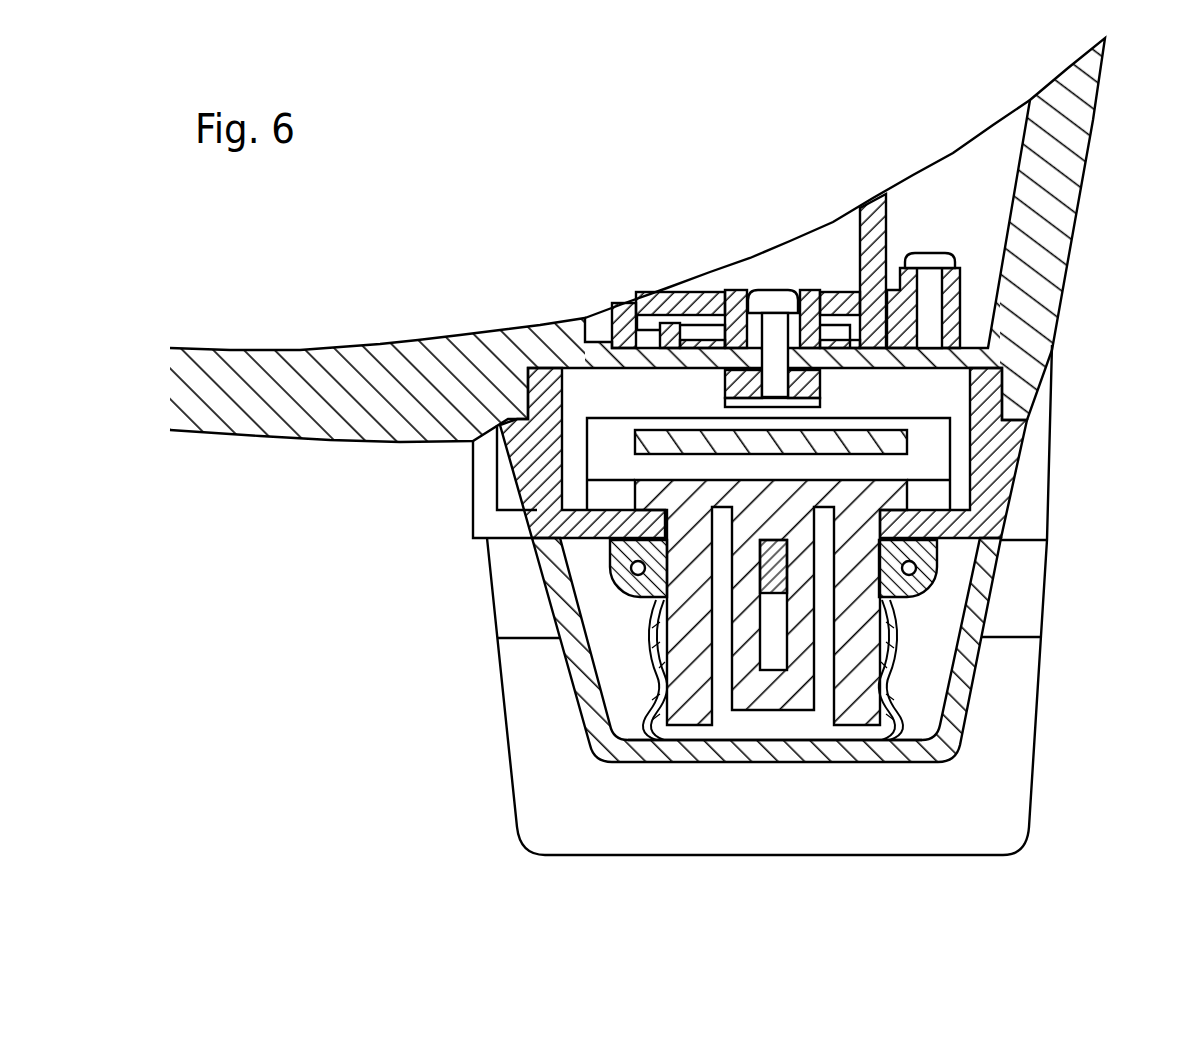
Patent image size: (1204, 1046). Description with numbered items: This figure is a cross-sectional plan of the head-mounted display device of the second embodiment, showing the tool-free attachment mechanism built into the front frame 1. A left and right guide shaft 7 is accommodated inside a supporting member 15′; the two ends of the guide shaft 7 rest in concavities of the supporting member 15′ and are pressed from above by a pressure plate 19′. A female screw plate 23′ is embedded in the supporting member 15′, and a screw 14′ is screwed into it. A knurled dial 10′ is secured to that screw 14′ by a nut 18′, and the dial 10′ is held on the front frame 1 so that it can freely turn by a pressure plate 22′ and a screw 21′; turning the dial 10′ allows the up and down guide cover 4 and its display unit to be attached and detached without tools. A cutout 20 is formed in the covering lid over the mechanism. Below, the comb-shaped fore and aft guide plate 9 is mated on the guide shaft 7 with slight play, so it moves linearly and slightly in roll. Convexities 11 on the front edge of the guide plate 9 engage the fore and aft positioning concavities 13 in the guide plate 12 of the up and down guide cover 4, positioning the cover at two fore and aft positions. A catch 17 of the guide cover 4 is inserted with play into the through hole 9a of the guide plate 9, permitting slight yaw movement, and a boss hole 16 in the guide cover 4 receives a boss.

The front frame 1 is at (1050, 255).
The up and down guide cover 4 is at (973, 690).
The left and right guide shaft 7 is at (937, 467).
The fore and aft guide plate 9 is at (793, 688).
The through hole 9a is at (770, 680).
The dial 10′ is at (667, 330).
The convexities 11 is at (680, 710).
The guide plate 12 is at (653, 673).
The fore and aft positioning concavities 13 is at (640, 653).
The screw 14′ is at (777, 302).
The supporting member 15′ is at (528, 450).
The boss hole 16 is at (610, 573).
The catch 17 is at (773, 577).
The nut 18′ is at (748, 332).
The pressure plate 19′ is at (953, 383).
The cutout 20 is at (602, 497).
The screw 21′ is at (927, 260).
The pressure plate 22′ is at (870, 217).
The female screw plate 23′ is at (727, 383).